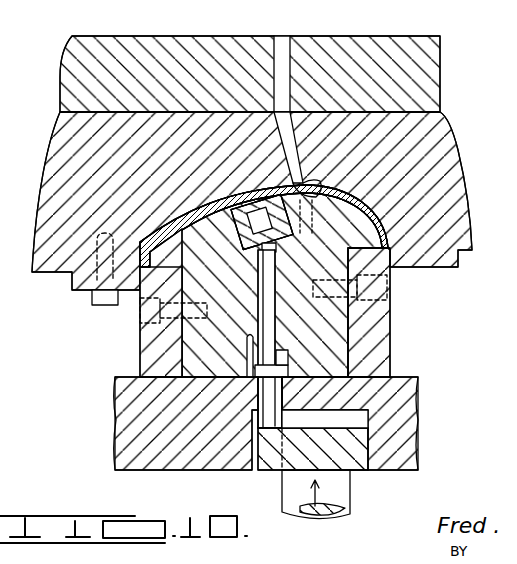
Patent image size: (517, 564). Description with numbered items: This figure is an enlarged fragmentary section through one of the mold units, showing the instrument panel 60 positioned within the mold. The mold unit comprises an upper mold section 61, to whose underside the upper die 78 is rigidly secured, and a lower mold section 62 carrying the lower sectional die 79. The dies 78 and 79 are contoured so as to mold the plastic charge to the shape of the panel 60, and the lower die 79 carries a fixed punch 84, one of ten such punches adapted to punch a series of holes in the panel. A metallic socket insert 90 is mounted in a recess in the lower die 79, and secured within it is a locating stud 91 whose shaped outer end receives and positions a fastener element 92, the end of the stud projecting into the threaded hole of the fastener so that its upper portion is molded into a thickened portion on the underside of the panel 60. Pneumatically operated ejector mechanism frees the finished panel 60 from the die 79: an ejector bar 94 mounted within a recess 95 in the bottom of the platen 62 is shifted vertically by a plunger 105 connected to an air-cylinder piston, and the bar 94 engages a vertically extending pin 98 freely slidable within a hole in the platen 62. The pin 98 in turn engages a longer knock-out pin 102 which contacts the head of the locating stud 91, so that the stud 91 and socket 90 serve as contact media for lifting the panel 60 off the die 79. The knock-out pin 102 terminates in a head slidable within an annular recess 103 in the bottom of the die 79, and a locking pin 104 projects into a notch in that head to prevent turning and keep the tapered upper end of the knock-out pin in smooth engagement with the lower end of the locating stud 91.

The upper mold section 61 is at (430, 72).
The upper die 78 is at (443, 162).
The fixed punch 84 is at (307, 181).
The instrument panel 60 is at (353, 193).
The fastener element 92 is at (257, 205).
The socket insert 90 is at (255, 245).
The locating stud 91 is at (260, 268).
The lower die 79 is at (380, 310).
The knock-out pin 102 is at (276, 328).
The locking pin 104 is at (247, 338).
The annular recess 103 is at (290, 362).
The lower mold section 62 is at (120, 422).
The pin 98 is at (267, 400).
The recess 95 is at (387, 407).
The ejector bar 94 is at (357, 442).
The plunger 105 is at (293, 487).